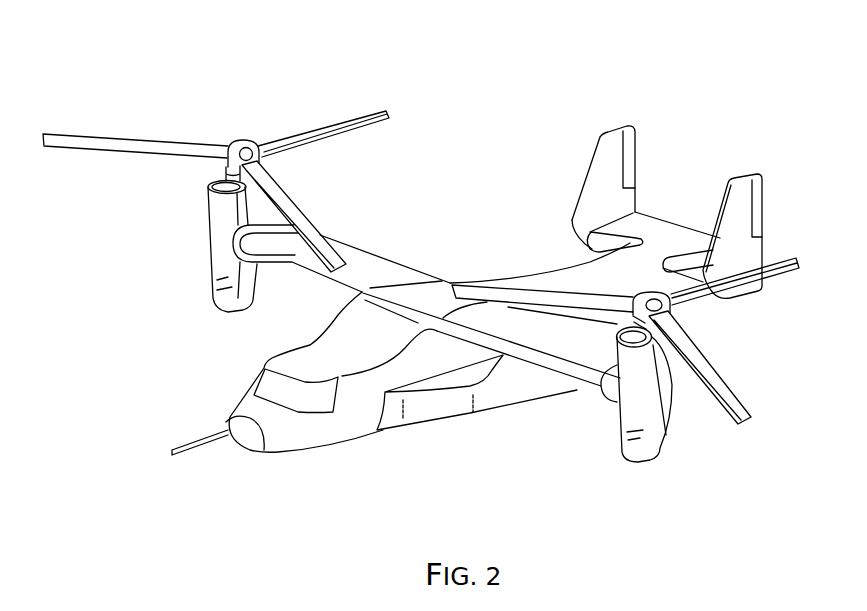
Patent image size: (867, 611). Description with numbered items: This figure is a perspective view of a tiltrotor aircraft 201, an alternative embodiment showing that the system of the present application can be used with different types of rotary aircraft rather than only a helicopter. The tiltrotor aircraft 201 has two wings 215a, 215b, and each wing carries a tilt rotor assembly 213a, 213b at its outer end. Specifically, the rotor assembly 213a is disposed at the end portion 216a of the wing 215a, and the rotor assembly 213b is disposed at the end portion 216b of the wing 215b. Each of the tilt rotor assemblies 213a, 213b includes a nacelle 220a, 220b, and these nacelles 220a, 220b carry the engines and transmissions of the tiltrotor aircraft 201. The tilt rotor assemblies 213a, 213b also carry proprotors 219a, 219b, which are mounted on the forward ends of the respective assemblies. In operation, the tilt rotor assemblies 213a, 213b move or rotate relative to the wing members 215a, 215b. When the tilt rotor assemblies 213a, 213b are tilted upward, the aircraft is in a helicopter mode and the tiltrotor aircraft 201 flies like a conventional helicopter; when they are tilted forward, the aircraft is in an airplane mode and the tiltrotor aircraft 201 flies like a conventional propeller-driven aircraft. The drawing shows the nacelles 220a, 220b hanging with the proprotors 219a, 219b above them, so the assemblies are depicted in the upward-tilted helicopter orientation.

The tiltrotor aircraft 201 is at (160, 74).
The rotor assembly 213a is at (166, 184).
The rotor assembly 213b is at (750, 369).
The wing 215a is at (370, 253).
The wing 215b is at (515, 355).
The end portion 216a is at (274, 219).
The end portion 216b is at (602, 338).
The proprotor 219a is at (322, 118).
The proprotor 219b is at (692, 330).
The nacelle 220a is at (212, 281).
The nacelle 220b is at (667, 450).